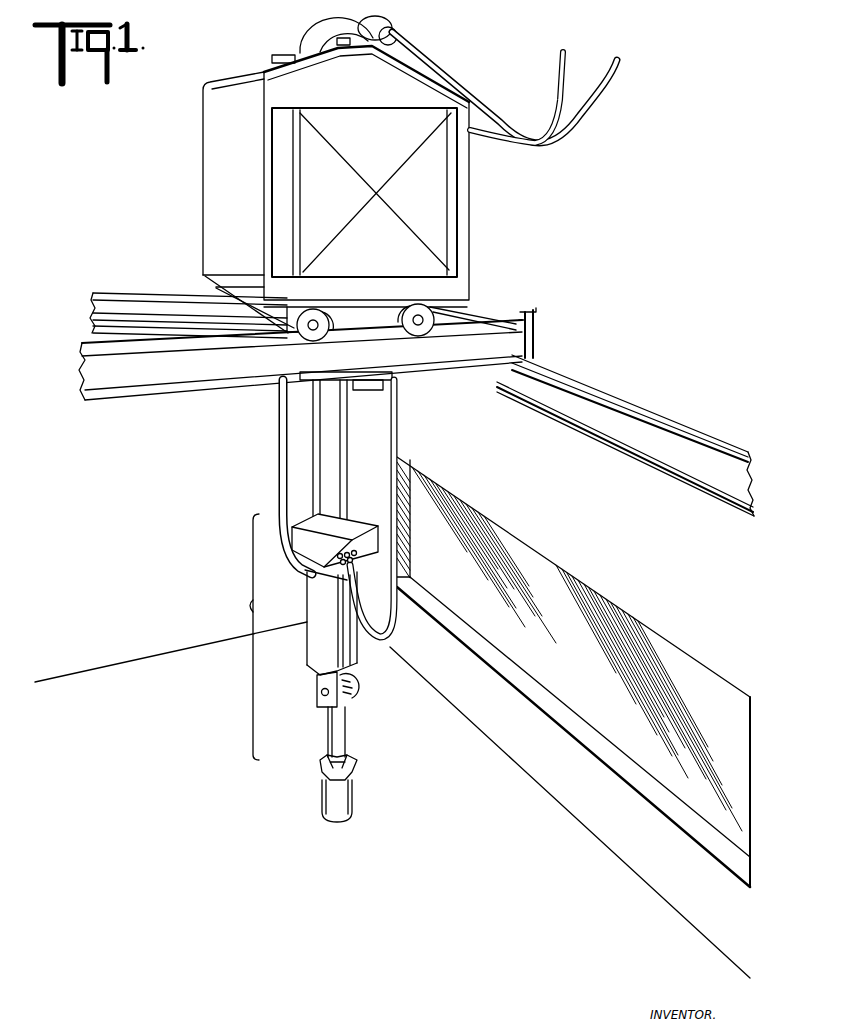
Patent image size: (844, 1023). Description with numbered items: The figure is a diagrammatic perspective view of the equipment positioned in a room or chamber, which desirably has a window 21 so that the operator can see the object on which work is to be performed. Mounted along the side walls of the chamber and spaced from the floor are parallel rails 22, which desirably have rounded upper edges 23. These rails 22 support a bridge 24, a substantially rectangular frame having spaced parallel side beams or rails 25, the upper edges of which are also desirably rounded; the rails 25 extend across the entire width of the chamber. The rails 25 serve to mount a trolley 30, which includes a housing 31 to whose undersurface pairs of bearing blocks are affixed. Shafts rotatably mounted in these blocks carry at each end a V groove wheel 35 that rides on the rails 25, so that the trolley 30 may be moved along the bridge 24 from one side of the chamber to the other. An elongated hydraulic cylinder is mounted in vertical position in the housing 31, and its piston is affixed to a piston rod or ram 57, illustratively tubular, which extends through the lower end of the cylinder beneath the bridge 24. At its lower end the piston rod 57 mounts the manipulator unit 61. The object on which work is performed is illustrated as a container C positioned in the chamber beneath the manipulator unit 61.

The window 21 is at (590, 697).
The parallel rails 22 is at (620, 422).
The rounded upper edges 23 is at (618, 398).
The bridge 24 is at (129, 399).
The side beams or rails 25 is at (215, 368).
The trolley 30 is at (206, 210).
The housing 31 is at (208, 157).
The V groove wheel 35 is at (316, 314).
The piston rod or ram 57 is at (338, 446).
The manipulator unit 61 is at (250, 602).
The container C is at (338, 821).